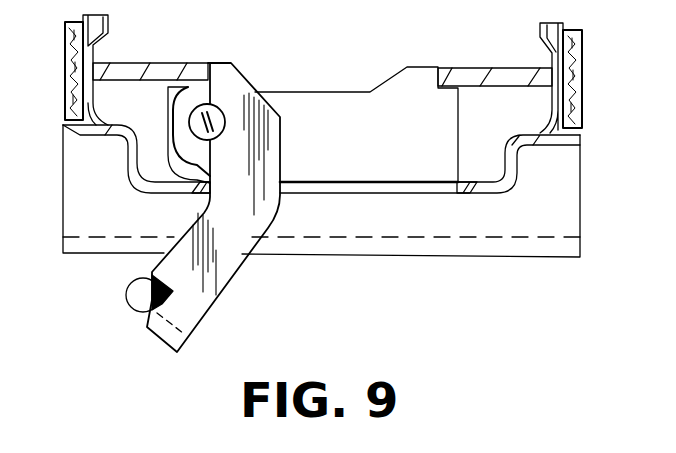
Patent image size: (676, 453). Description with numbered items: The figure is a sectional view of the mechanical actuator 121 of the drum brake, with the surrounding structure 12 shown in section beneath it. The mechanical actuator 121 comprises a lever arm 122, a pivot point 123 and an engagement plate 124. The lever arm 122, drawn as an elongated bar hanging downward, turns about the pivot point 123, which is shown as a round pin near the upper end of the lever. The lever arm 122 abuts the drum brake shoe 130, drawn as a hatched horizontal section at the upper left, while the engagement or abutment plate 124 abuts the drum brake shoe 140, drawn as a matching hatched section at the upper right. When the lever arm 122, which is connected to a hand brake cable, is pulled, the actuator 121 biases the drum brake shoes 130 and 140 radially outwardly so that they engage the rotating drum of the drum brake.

The body 12 is at (558, 223).
The mechanical actuator 121 is at (494, 301).
The lever arm 122 is at (230, 278).
The pivot point 123 is at (225, 113).
The engagement plate 124 is at (398, 146).
The drum brake shoe 130 is at (150, 62).
The drum brake shoe 140 is at (480, 67).